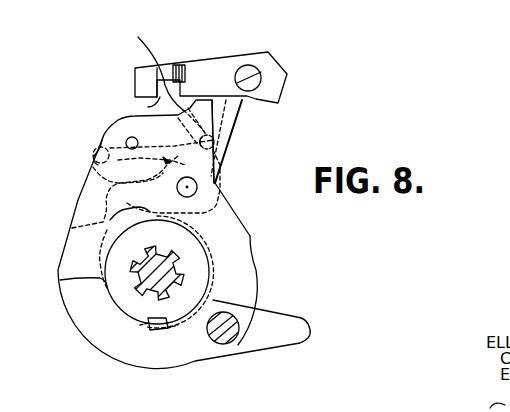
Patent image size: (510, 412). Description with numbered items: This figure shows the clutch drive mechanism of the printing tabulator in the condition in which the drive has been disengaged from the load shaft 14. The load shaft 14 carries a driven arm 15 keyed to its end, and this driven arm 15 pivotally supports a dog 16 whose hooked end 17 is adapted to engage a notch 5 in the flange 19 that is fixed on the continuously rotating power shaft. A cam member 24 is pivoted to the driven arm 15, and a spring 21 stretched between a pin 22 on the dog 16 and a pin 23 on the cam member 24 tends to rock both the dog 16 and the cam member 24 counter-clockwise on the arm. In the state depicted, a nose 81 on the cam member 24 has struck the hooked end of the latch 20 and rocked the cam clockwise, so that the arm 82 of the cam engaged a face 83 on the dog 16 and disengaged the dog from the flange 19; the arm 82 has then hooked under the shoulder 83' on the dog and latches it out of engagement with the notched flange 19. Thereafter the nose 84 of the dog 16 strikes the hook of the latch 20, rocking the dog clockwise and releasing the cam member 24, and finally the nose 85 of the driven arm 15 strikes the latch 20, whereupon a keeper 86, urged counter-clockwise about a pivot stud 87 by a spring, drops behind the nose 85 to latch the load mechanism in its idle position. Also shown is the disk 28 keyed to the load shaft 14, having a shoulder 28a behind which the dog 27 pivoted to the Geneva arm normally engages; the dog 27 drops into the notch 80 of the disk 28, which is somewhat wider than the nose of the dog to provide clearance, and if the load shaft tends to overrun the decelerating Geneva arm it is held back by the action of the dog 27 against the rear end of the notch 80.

The notch 5 is at (127, 230).
The load shaft 14 is at (178, 272).
The driven arm 15 is at (254, 271).
The dog 16 is at (216, 183).
The hooked end 17 is at (72, 227).
The flange 19 is at (210, 243).
The latch 20 is at (137, 73).
The spring 21 is at (149, 164).
The pin 22 is at (217, 141).
The pin 23 is at (93, 157).
The cam member 24 is at (100, 143).
The dog 27 is at (218, 344).
The disk 28 is at (107, 261).
The shoulder 28a is at (62, 281).
The notch 80 is at (147, 313).
The nose 81 is at (148, 106).
The arm 82 is at (170, 160).
The face 83 is at (154, 63).
The shoulder 83' is at (204, 126).
The nose 84 is at (212, 96).
The nose 85 is at (240, 115).
The keeper 86 is at (195, 74).
The pivot stud 87 is at (262, 73).